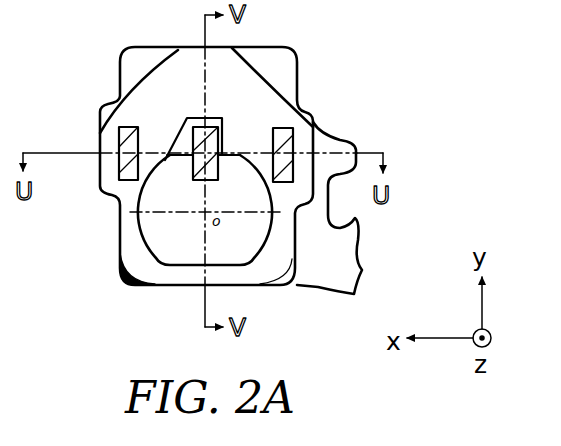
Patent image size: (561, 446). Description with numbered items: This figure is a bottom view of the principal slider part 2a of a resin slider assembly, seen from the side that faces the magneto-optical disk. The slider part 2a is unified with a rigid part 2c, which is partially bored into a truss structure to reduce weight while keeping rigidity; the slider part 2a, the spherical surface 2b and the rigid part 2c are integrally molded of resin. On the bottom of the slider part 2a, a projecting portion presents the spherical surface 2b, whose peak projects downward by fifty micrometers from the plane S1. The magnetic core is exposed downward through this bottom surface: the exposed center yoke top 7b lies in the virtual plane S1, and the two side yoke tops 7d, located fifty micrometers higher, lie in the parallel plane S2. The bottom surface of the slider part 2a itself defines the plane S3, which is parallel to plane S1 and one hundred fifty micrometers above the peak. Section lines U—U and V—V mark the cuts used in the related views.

The slider part 2a is at (119, 230).
The spherical surface 2b is at (248, 247).
The rigid part 2c is at (338, 133).
The center yoke top 7b is at (221, 118).
The side yoke tops 7d is at (118, 145).
The plane S1 is at (227, 132).
The plane S2 is at (175, 62).
The plane S3 is at (125, 55).